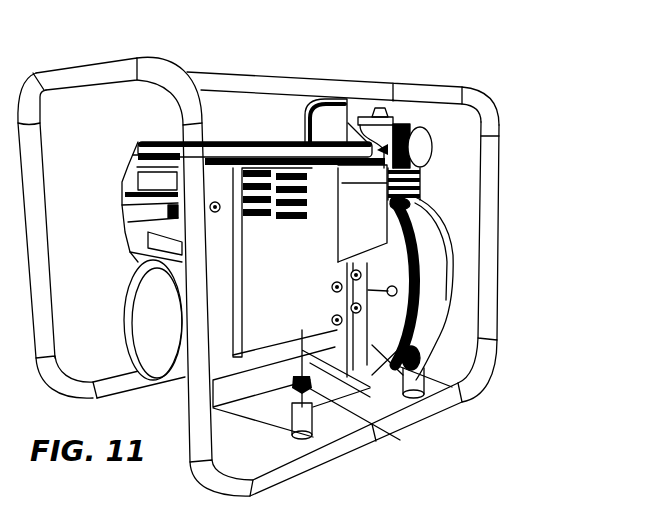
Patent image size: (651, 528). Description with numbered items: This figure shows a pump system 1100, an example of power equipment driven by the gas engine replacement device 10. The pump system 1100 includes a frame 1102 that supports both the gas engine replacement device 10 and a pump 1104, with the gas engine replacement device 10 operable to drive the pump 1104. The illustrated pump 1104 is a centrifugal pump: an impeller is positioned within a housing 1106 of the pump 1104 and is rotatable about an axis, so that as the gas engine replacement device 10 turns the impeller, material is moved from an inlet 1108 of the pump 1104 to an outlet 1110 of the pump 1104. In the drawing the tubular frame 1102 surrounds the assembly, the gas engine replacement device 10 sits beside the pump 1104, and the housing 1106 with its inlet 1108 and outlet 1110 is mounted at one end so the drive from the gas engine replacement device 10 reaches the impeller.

The gas engine replacement device 10 is at (242, 148).
The pump system 1100 is at (530, 48).
The frame 1102 is at (500, 117).
The pump 1104 is at (434, 345).
The housing 1106 is at (428, 298).
The inlet 1108 is at (433, 220).
The outlet 1110 is at (430, 149).